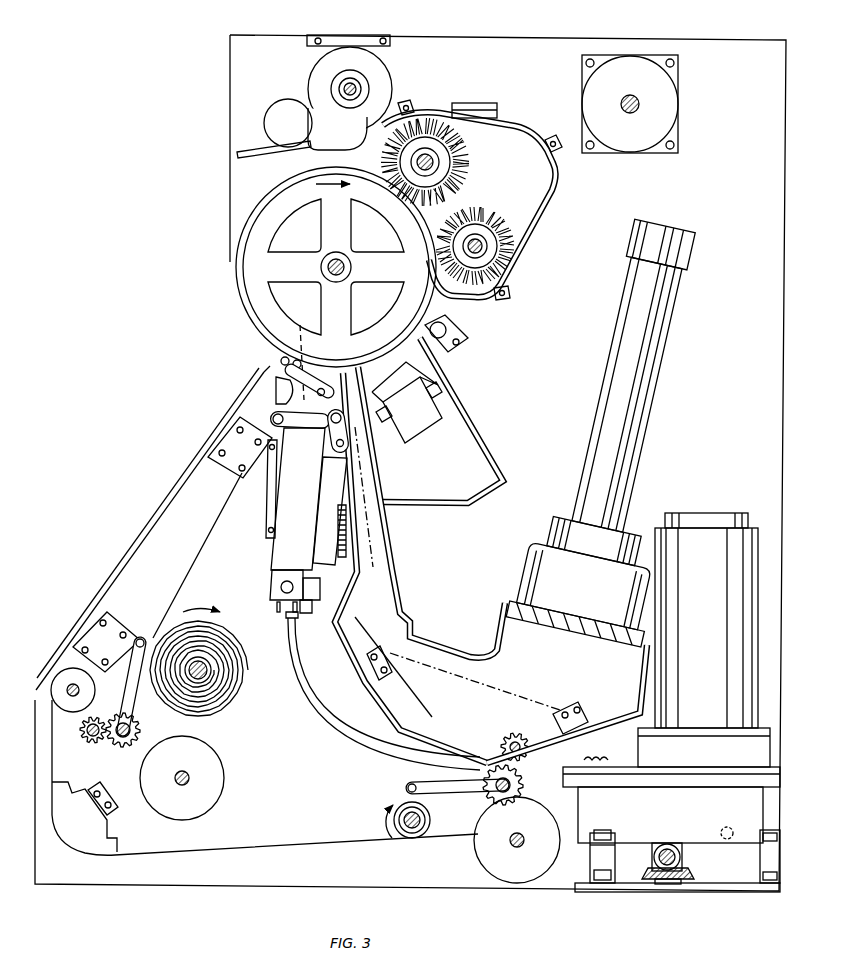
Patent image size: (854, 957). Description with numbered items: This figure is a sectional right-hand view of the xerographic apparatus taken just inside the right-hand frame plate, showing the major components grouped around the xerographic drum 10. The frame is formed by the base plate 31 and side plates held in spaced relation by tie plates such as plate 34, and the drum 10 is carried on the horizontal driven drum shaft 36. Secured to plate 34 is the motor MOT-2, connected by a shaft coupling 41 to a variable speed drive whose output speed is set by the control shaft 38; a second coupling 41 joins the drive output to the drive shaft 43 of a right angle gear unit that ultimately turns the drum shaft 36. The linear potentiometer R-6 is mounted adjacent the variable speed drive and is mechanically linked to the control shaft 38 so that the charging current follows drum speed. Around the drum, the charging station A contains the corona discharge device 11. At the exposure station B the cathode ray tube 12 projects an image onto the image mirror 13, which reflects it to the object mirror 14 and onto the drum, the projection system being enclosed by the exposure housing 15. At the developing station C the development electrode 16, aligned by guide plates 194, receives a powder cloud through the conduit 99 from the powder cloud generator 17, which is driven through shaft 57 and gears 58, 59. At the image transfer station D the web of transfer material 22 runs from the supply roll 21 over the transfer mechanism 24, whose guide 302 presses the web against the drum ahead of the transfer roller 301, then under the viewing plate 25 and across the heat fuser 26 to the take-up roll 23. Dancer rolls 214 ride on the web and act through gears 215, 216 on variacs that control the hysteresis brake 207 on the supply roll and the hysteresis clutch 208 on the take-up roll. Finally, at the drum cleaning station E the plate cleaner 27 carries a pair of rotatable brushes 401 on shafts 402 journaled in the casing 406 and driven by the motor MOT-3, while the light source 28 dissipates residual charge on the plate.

The xerographic drum 10 is at (238, 262).
The corona discharge device 11 is at (416, 420).
The cathode ray tube 12 is at (655, 352).
The image mirror 13 is at (614, 685).
The object mirror 14 is at (428, 714).
The exposure housing 15 is at (441, 642).
The development electrode 16 is at (270, 548).
The powder cloud generator 17 is at (712, 512).
The supply roll 21 is at (212, 670).
The web of transfer material 22 is at (177, 571).
The take-up roll 23 is at (426, 820).
The transfer mechanism 24 is at (272, 391).
The viewing plate 25 is at (160, 508).
The heat fuser 26 is at (108, 843).
The plate cleaner 27 is at (507, 120).
The light source 28 is at (462, 338).
The base plate 31 is at (680, 894).
The tie plate 34 is at (388, 37).
The drum shaft 36 is at (290, 104).
The control shaft 38 is at (260, 150).
The shaft coupling 41 is at (330, 80).
The drive shaft 43 is at (362, 87).
The shaft 57 is at (681, 857).
The gear 58 is at (653, 857).
The gear 59 is at (690, 873).
The conduit 99 is at (327, 710).
The guide plates 194 is at (270, 510).
The hysteresis brake 207 is at (222, 772).
The hysteresis clutch 208 is at (478, 855).
The dancer roll 214 is at (140, 670).
The gear 215 is at (126, 752).
The gear 216 is at (88, 745).
The transfer roller 301 is at (304, 353).
The guide 302 is at (300, 360).
The rotatable brushes 401 is at (458, 207).
The shafts 402 is at (433, 160).
The casing 406 is at (553, 140).
The charging station A is at (455, 379).
The exposure station B is at (396, 533).
The developing station C is at (268, 520).
The image transfer station D is at (272, 362).
The drum cleaning station E is at (552, 184).
The motor MOT-2 is at (383, 72).
The motor MOT-3 is at (676, 98).
The linear potentiometer R-6 is at (300, 136).